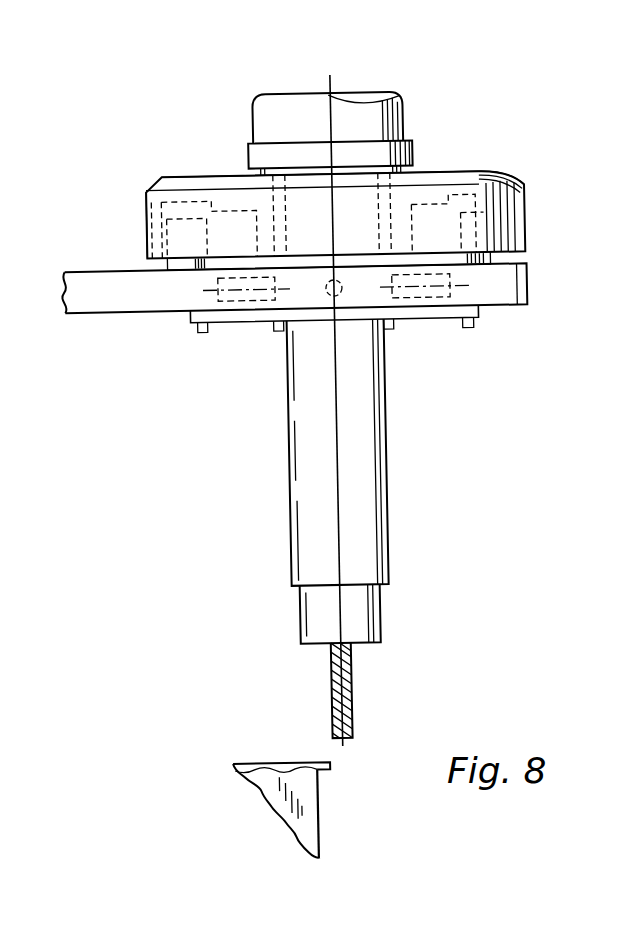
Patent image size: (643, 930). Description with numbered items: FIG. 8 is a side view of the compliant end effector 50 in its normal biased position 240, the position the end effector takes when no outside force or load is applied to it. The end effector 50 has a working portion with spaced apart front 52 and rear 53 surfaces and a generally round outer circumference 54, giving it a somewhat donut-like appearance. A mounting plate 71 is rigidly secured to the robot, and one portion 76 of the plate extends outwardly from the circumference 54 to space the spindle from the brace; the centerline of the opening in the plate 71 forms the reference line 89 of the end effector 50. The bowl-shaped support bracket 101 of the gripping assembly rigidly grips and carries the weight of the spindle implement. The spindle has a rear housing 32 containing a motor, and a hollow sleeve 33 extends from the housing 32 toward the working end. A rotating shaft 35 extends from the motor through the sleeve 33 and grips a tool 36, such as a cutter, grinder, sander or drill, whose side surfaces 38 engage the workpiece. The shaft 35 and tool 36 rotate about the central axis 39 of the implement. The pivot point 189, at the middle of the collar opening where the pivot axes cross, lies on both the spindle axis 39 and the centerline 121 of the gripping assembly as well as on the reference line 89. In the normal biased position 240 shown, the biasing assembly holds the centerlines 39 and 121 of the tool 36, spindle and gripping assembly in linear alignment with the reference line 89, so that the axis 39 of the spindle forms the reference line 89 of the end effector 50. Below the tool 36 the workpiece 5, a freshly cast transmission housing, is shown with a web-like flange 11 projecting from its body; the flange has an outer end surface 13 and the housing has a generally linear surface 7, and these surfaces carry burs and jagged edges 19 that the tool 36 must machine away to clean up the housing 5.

The workpiece 5 is at (301, 809).
The linear surface 7 is at (322, 830).
The flange 11 is at (248, 792).
The outer end surface 13 is at (321, 793).
The jagged edge 19 is at (330, 766).
The rear housing 32 is at (402, 133).
The hollow sleeve 33 is at (367, 408).
The rotating shaft 35 is at (358, 610).
The tool 36 is at (333, 690).
The side surfaces 38 is at (370, 681).
The central axis 39 is at (417, 395).
The compliant end effector 50 is at (145, 185).
The front surface 52 is at (225, 322).
The rear surface 53 is at (228, 177).
The outer circumference 54 is at (147, 220).
The mounting plate 71 is at (173, 301).
The outwardly extending portion 76 is at (90, 301).
The reference line 89 is at (417, 408).
The support bracket 101 is at (520, 177).
The gripping assembly centerline 121 is at (417, 410).
The pivot point 189 is at (327, 296).
The normal biased position 240 is at (350, 195).